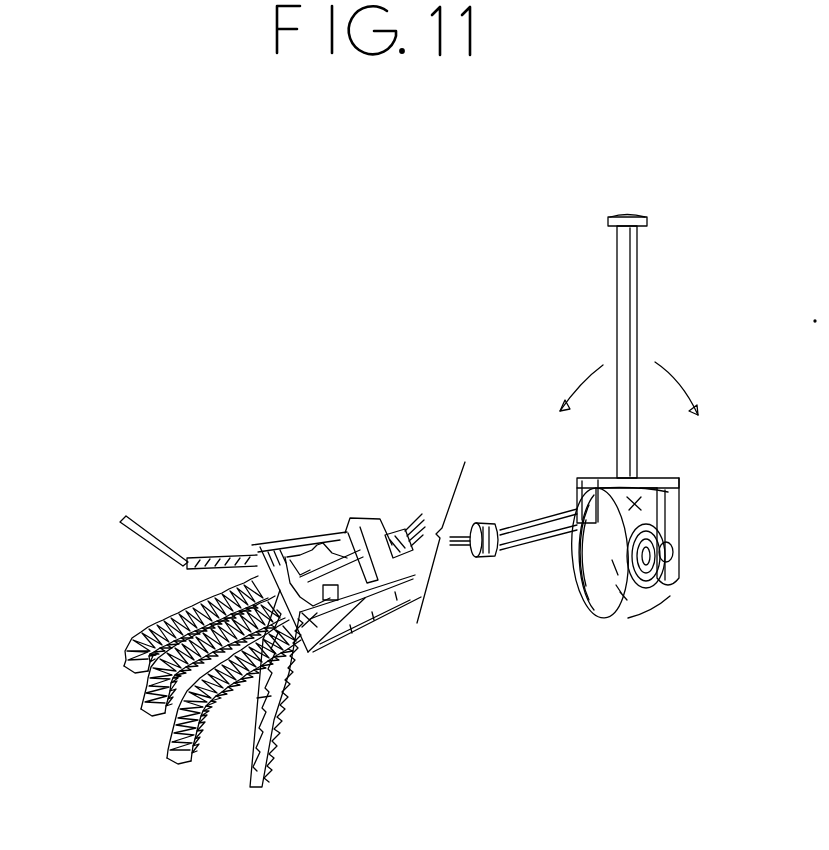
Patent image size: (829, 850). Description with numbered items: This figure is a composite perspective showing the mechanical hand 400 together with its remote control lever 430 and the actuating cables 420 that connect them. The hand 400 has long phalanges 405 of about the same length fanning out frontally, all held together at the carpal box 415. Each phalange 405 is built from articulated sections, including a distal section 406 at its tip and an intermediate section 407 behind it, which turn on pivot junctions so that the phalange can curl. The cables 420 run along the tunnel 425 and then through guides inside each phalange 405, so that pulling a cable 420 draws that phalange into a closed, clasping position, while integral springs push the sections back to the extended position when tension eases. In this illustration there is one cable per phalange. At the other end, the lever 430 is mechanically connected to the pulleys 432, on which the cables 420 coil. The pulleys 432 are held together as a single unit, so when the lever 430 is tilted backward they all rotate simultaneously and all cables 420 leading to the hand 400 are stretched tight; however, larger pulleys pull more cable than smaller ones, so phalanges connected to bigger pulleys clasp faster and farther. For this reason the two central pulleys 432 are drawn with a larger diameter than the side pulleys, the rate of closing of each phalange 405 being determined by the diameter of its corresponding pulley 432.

The mechanical hand 400 is at (280, 548).
The long phalanges 405 is at (165, 610).
The distal section 406 is at (160, 755).
The intermediate section 407 is at (187, 737).
The carpal box 415 is at (367, 627).
The cables 420 is at (425, 472).
The tunnel 425 is at (368, 548).
The lever 430 is at (617, 262).
The pulleys 432 is at (672, 596).